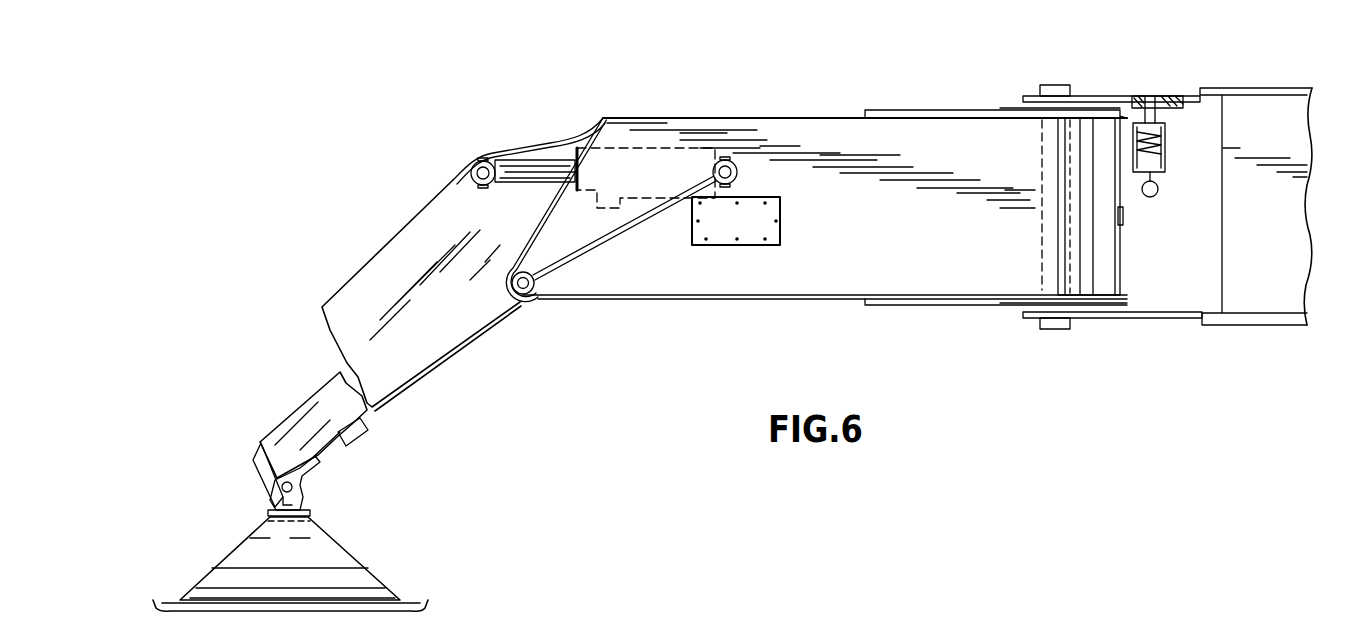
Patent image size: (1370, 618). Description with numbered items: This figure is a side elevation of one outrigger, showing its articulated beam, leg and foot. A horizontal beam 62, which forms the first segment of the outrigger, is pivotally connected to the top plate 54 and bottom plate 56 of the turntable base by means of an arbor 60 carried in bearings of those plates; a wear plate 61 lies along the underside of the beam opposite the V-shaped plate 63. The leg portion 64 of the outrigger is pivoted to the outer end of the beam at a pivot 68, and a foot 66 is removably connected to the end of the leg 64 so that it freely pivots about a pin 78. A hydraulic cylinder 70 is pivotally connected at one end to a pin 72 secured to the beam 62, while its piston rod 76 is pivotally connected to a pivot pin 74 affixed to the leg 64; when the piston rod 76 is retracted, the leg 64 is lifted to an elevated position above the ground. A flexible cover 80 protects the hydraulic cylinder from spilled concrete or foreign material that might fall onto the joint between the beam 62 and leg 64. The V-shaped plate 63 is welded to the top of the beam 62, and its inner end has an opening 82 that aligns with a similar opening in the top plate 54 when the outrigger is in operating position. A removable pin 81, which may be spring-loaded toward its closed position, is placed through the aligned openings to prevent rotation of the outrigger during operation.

The top plate 54 is at (1035, 90).
The bottom plate 56 is at (1083, 309).
The arbor 60 is at (1040, 237).
The lower wear plate 61 is at (902, 306).
The horizontal beam 62 is at (813, 277).
The V-shaped plate 63 is at (890, 110).
The leg portion 64 is at (443, 340).
The foot 66 is at (340, 560).
The pivot 68 is at (538, 297).
The hydraulic cylinder 70 is at (662, 160).
The pin 72 is at (737, 172).
The pivot pin 74 is at (479, 162).
The piston rod 76 is at (527, 163).
The pin 78 is at (296, 487).
The flexible cover 80 is at (579, 128).
The removable pin 81 is at (1147, 98).
The opening 82 is at (1170, 96).